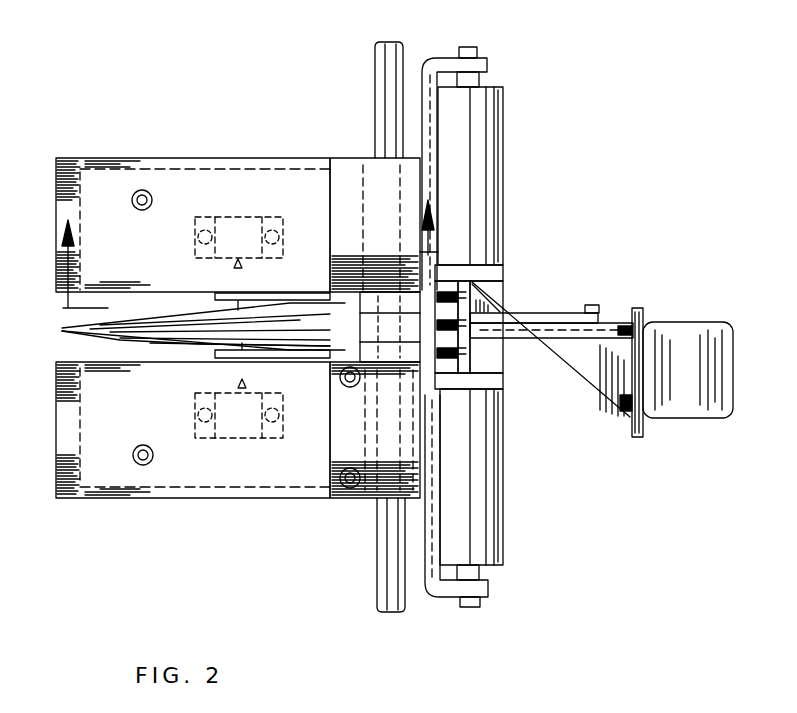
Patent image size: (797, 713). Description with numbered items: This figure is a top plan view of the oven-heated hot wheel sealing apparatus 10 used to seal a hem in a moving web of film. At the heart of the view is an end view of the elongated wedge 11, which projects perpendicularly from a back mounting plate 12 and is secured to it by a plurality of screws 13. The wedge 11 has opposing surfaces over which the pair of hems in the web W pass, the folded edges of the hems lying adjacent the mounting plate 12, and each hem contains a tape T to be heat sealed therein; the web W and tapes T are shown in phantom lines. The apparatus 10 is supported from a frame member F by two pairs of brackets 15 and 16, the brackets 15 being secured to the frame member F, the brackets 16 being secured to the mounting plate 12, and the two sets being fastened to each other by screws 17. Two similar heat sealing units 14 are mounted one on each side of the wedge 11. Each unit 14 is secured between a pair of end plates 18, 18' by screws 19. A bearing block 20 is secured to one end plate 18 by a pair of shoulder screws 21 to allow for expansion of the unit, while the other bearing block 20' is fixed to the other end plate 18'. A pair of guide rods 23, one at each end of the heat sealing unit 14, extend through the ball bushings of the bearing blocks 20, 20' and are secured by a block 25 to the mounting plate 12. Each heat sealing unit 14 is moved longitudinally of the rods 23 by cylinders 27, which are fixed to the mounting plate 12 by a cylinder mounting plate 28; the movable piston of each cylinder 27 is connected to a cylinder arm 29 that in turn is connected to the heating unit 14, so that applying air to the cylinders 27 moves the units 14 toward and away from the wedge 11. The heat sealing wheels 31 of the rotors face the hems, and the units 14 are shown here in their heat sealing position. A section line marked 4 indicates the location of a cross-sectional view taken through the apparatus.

The section line 4- 4 is at (245, 254).
The oven-heated hot wheel sealing apparatus 10 is at (100, 326).
The elongated wedge 11 is at (165, 343).
The back mounting plate 12 is at (447, 290).
The screws 13 is at (490, 298).
The heat sealing unit 14 is at (160, 428).
The brackets 15 is at (588, 374).
The brackets 16 is at (516, 320).
The screws 17 is at (563, 318).
The end plate 18 is at (193, 450).
The end plate 18' is at (193, 207).
The screws 19 is at (142, 190).
The bearing block 20 is at (373, 458).
The bearing block 20' is at (346, 207).
The shoulder screws 21 is at (330, 298).
The guide rods 23 is at (383, 78).
The block 25 is at (365, 330).
The cylinders 27 is at (478, 138).
The cylinder mounting plate 28 is at (498, 272).
The cylinder arm 29 is at (432, 72).
The heat sealing wheels 31 is at (238, 293).
The web W is at (166, 310).
The tape T is at (325, 293).
The frame member F is at (680, 335).